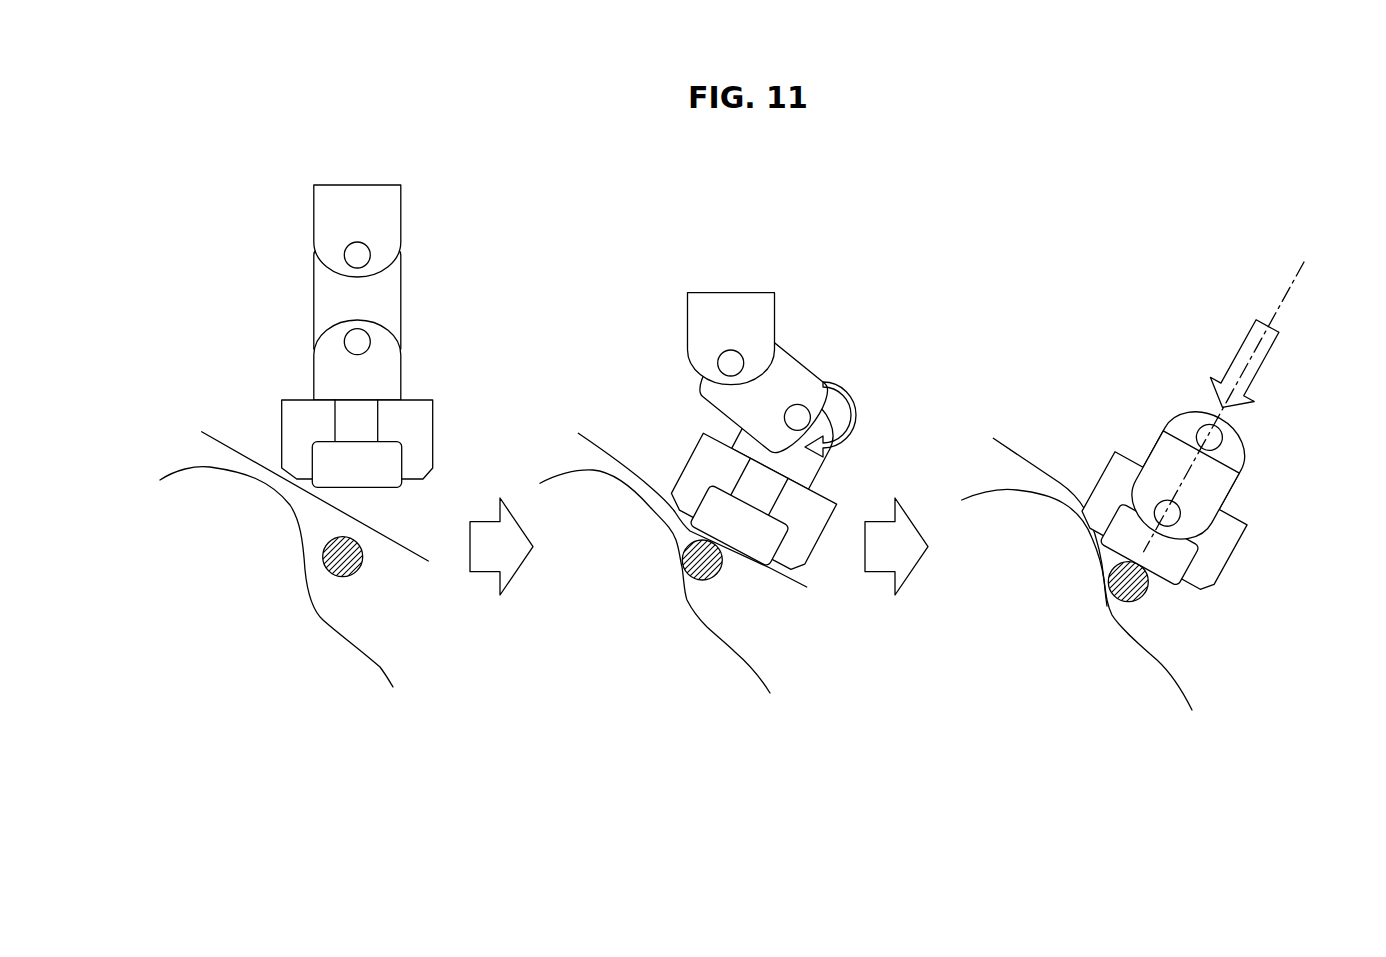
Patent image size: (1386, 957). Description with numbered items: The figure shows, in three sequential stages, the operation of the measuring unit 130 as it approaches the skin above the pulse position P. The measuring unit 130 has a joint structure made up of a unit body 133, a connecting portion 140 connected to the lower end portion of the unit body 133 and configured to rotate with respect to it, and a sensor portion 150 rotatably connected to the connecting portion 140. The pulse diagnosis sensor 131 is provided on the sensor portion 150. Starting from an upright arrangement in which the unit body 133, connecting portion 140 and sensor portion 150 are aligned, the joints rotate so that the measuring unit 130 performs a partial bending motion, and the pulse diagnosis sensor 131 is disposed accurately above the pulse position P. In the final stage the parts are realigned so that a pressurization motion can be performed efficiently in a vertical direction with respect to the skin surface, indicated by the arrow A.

The measuring unit 130 is at (744, 434).
The unit body 133 is at (401, 207).
The connecting portion 140 is at (401, 297).
The sensor portion 150 is at (433, 432).
The pulse diagnosis sensor 131 is at (370, 487).
The pulse position P is at (350, 567).
The arrow A is at (1265, 365).